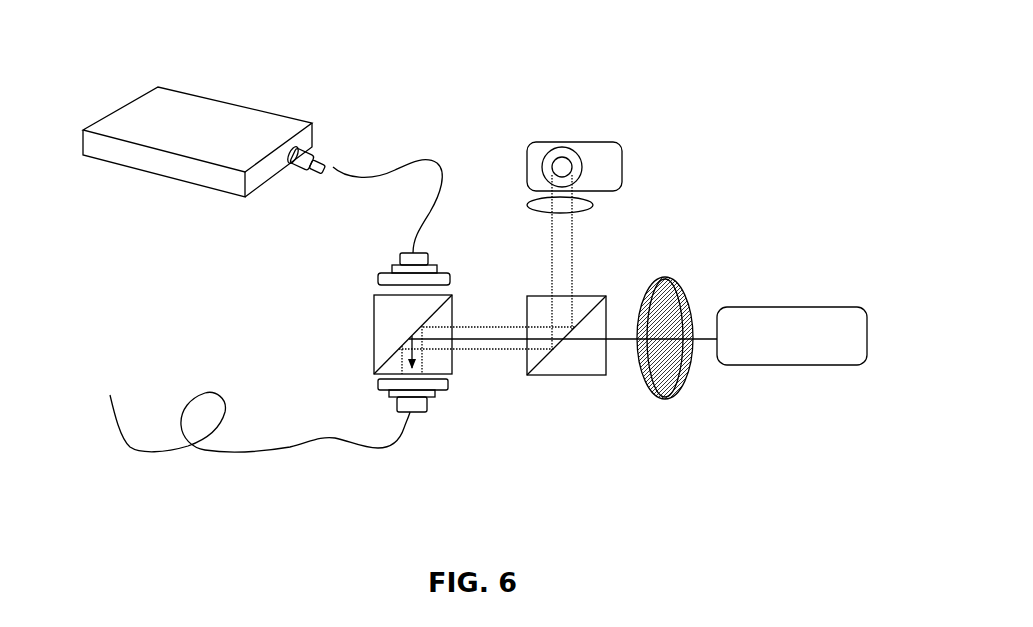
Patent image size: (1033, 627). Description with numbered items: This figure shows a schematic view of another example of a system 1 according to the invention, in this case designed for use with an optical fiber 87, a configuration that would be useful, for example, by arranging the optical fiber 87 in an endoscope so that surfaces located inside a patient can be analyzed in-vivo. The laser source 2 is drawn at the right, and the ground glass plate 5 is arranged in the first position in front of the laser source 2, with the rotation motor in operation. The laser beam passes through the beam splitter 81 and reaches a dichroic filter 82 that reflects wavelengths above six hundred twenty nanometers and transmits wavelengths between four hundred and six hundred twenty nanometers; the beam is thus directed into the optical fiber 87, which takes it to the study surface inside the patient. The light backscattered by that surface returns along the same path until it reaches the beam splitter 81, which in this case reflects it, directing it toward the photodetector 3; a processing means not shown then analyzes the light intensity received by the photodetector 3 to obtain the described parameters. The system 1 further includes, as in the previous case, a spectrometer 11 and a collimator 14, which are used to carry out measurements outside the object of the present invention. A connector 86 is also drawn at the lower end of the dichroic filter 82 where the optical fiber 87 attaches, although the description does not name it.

The system 1 is at (118, 52).
The spectrometer 11 is at (205, 122).
The collimator 14 is at (391, 222).
The dichroic filter 82 is at (385, 334).
The optical fiber connector 86 is at (428, 414).
The optical fiber 87 is at (273, 441).
The photodetector 3 is at (593, 163).
The beam splitter 81 is at (573, 363).
The ground glass plate 5 is at (683, 290).
The laser source 2 is at (792, 336).